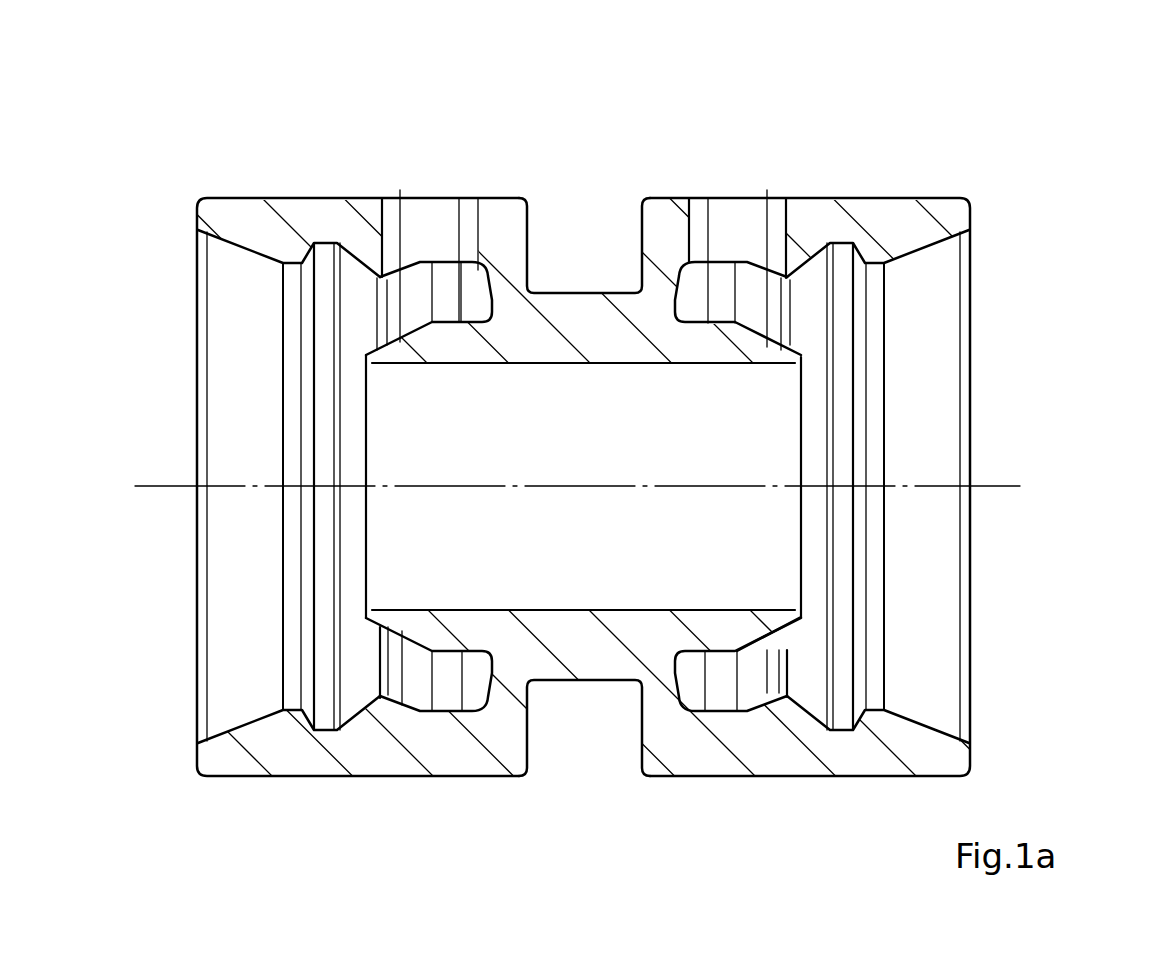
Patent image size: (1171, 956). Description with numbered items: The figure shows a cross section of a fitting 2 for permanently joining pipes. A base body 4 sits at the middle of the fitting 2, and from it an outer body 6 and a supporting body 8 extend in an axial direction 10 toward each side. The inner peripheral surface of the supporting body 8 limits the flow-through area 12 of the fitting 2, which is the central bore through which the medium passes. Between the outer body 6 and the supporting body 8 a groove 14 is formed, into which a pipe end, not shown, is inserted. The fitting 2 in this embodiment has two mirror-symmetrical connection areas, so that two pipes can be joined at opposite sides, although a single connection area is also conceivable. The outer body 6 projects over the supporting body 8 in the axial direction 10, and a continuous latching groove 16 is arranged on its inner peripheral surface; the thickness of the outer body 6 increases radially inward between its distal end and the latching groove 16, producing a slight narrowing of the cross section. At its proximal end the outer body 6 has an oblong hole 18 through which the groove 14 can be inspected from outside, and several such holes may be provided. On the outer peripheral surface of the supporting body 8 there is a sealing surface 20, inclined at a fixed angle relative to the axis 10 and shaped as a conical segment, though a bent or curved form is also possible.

The fitting 2 is at (1068, 88).
The base body 4 is at (583, 153).
The outer body 6 is at (882, 213).
The supporting body 8 is at (757, 345).
The axial direction 10 is at (1020, 483).
The flow-through area 12 is at (598, 454).
The groove 14 is at (720, 670).
The latching groove 16 is at (848, 722).
The oblong hole 18 is at (730, 218).
The sealing surface 20 is at (778, 632).